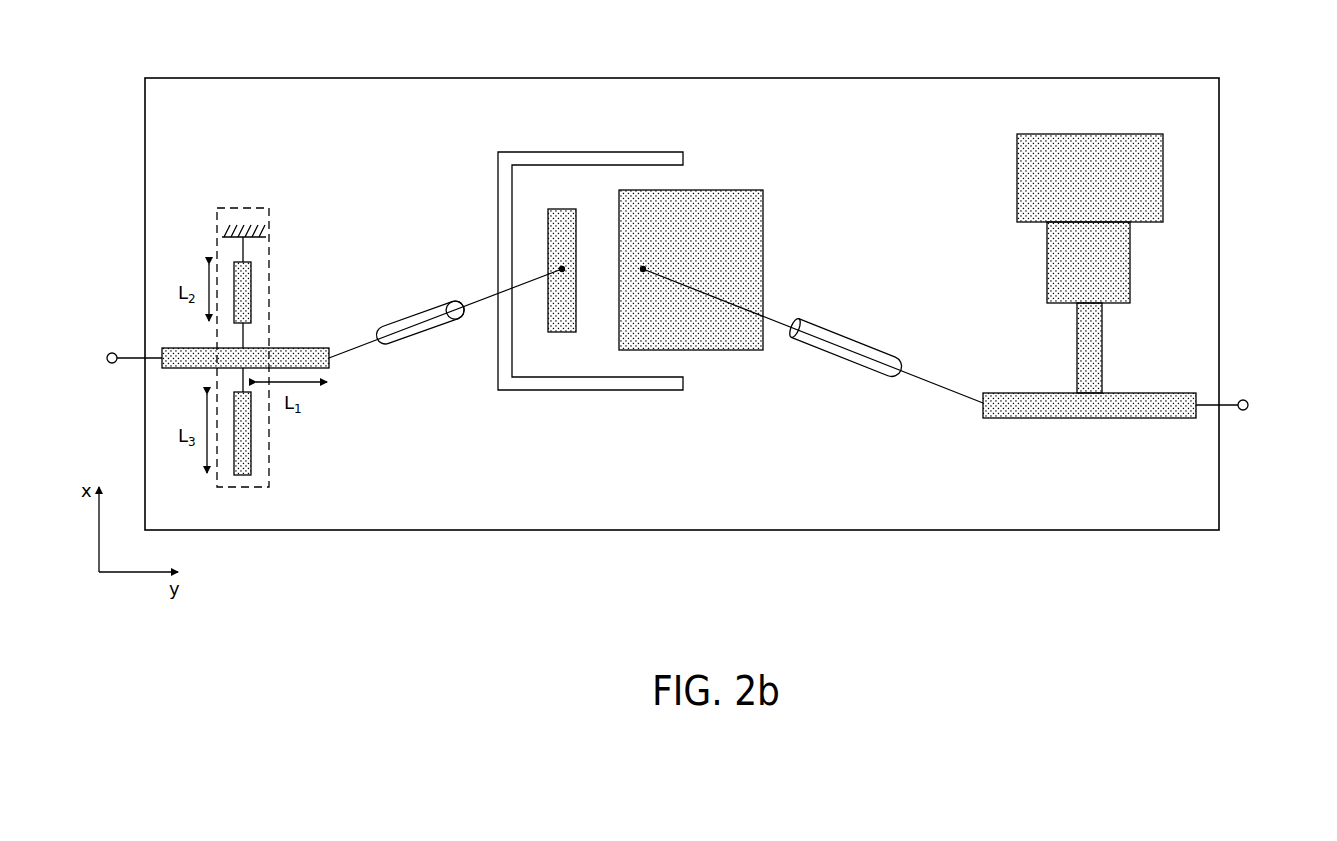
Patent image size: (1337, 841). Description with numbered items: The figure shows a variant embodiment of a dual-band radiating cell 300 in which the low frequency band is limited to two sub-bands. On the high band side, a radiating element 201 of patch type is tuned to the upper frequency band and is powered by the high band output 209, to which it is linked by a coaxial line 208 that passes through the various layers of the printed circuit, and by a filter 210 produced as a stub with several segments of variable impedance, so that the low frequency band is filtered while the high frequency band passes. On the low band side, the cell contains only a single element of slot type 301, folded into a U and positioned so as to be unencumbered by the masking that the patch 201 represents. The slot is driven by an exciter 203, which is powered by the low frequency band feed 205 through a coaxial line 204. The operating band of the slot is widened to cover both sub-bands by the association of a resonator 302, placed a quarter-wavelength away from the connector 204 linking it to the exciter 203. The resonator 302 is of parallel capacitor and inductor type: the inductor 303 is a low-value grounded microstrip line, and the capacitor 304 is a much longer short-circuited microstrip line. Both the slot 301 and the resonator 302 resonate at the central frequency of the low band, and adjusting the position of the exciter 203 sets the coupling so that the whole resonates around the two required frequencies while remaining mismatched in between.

The radiating cell 300 is at (1185, 78).
The low frequency band feed 205 is at (107, 353).
The resonator 302 is at (255, 207).
The inductor 303 is at (251, 297).
The capacitor 304 is at (251, 455).
The coaxial line 204 is at (418, 338).
The element of slot type 301 is at (580, 152).
The exciter 203 is at (548, 240).
The radiating element of patch type 201 is at (763, 190).
The coaxial line 208 is at (843, 363).
The filter 210 is at (1130, 293).
The high band output 209 is at (1248, 398).